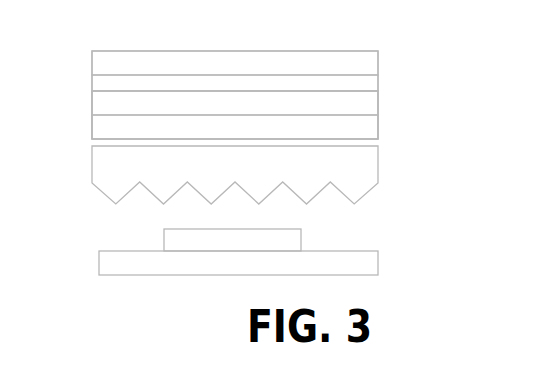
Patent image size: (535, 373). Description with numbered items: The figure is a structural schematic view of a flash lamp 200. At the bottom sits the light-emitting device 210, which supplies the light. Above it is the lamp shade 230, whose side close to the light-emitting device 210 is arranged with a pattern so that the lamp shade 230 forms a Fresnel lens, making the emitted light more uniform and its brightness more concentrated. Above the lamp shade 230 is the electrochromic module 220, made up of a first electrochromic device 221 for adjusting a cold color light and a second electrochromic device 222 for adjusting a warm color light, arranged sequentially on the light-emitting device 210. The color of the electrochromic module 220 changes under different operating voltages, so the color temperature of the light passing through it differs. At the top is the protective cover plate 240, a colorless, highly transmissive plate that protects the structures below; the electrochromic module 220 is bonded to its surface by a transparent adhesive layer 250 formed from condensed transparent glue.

The flash lamp 200 is at (255, 40).
The protective cover plate 240 is at (378, 62).
The transparent adhesive layer 250 is at (378, 83).
The first electrochromic device 221 is at (378, 105).
The second electrochromic device 222 is at (378, 126).
The electrochromic module 220 is at (92, 92).
The lamp shade 230 is at (378, 165).
The light-emitting device 210 is at (301, 236).